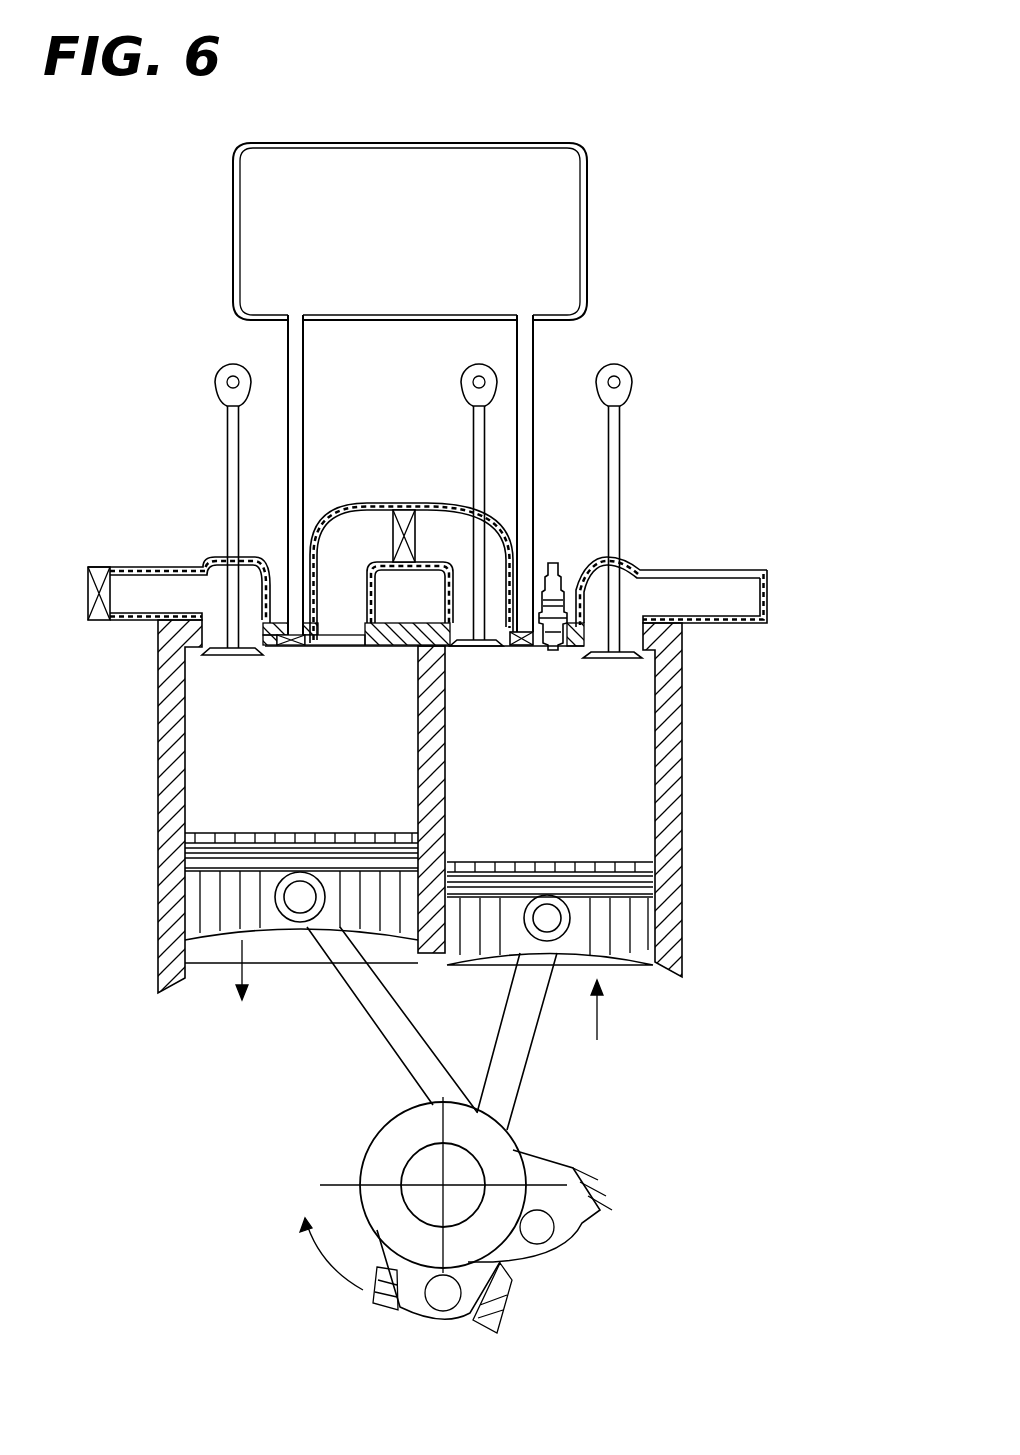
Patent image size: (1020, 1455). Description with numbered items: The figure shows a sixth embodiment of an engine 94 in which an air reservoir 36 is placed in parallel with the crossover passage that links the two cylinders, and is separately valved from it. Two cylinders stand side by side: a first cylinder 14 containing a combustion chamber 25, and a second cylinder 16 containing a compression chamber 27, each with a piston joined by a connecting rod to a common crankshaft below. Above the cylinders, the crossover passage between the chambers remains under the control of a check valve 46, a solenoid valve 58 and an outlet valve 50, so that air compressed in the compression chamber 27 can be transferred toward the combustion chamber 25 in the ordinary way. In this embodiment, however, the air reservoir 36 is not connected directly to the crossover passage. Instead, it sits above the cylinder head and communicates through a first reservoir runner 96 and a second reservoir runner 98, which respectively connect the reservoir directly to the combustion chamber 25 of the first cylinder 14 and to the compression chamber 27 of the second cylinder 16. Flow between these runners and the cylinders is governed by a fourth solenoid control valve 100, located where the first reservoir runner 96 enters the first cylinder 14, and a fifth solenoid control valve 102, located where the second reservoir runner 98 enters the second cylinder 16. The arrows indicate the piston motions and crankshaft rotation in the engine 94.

The first cylinder 14 is at (653, 718).
The second cylinder 16 is at (181, 783).
The combustion chamber 25 is at (630, 683).
The compression chamber 27 is at (225, 722).
The air reservoir 36 is at (592, 200).
The check valve 46 is at (342, 646).
The outlet valve 50 is at (477, 648).
The solenoid valve 58 is at (392, 532).
The engine 94 is at (670, 440).
The first reservoir runner 96 is at (533, 351).
The second reservoir runner 98 is at (287, 340).
The fourth solenoid control valve 100 is at (520, 647).
The fifth solenoid control valve 102 is at (287, 647).